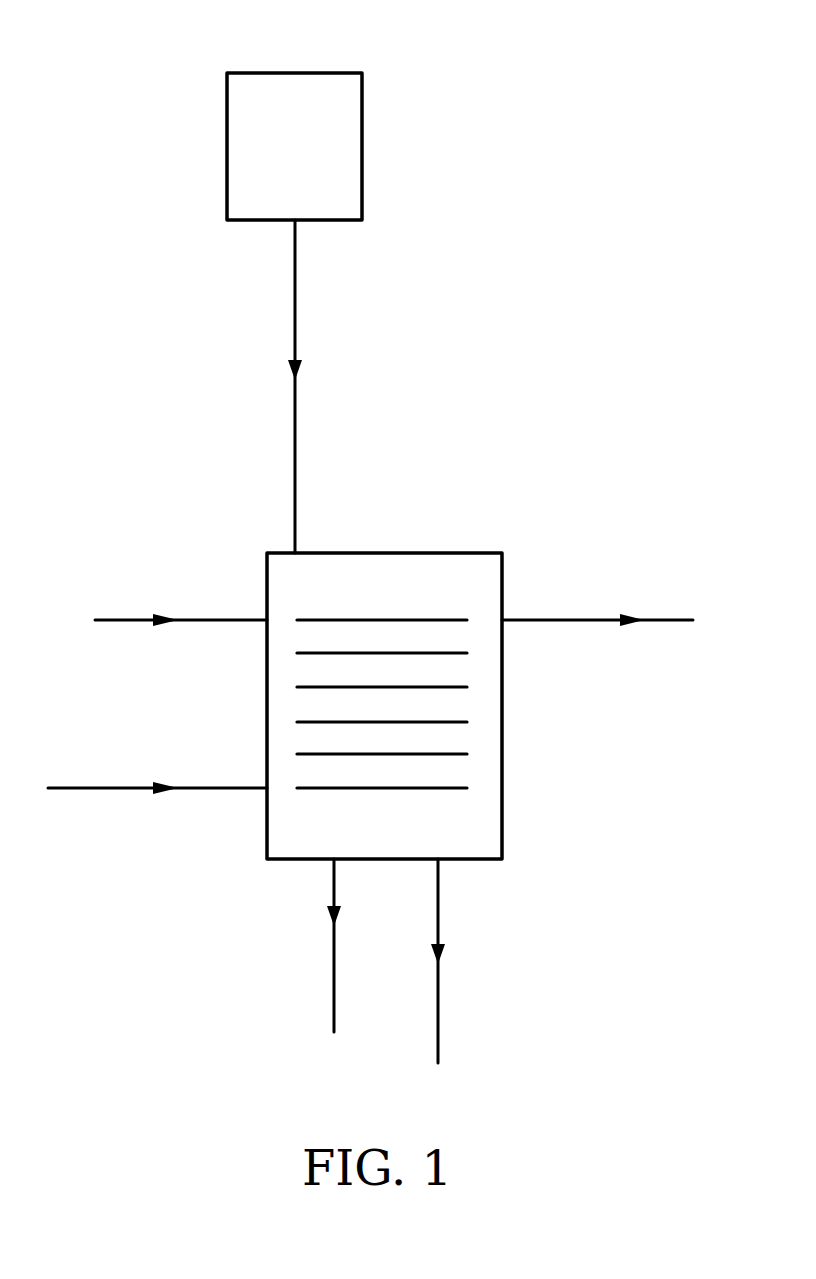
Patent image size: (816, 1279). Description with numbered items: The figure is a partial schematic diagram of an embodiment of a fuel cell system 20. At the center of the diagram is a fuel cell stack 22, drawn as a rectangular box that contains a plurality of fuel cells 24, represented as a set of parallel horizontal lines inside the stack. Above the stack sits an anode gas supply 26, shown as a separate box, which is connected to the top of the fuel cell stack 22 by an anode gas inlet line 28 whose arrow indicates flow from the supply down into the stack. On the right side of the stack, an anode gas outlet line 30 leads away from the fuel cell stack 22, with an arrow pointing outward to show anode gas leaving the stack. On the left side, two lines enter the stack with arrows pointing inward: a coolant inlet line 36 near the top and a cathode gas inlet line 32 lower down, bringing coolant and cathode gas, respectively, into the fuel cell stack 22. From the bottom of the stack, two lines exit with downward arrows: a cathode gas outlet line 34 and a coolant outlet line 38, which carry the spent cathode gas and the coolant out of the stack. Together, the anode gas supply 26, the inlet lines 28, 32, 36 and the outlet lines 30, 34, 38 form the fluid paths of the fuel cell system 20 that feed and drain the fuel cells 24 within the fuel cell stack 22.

The fuel cell system 20 is at (620, 993).
The fuel cell stack 22 is at (504, 748).
The fuel cells 24 is at (467, 653).
The anode gas supply 26 is at (290, 72).
The anode gas inlet line 28 is at (297, 318).
The anode gas outlet line 30 is at (550, 618).
The cathode gas inlet line 32 is at (82, 790).
The cathode gas outlet line 34 is at (333, 971).
The coolant inlet line 36 is at (124, 622).
The coolant outlet line 38 is at (440, 990).